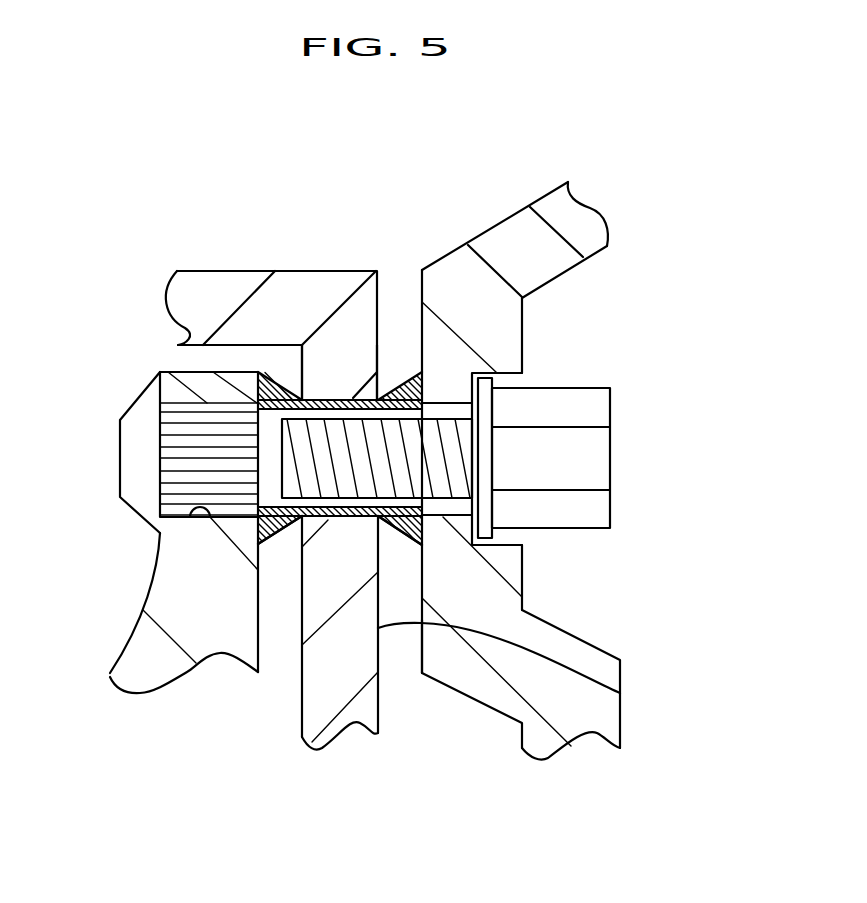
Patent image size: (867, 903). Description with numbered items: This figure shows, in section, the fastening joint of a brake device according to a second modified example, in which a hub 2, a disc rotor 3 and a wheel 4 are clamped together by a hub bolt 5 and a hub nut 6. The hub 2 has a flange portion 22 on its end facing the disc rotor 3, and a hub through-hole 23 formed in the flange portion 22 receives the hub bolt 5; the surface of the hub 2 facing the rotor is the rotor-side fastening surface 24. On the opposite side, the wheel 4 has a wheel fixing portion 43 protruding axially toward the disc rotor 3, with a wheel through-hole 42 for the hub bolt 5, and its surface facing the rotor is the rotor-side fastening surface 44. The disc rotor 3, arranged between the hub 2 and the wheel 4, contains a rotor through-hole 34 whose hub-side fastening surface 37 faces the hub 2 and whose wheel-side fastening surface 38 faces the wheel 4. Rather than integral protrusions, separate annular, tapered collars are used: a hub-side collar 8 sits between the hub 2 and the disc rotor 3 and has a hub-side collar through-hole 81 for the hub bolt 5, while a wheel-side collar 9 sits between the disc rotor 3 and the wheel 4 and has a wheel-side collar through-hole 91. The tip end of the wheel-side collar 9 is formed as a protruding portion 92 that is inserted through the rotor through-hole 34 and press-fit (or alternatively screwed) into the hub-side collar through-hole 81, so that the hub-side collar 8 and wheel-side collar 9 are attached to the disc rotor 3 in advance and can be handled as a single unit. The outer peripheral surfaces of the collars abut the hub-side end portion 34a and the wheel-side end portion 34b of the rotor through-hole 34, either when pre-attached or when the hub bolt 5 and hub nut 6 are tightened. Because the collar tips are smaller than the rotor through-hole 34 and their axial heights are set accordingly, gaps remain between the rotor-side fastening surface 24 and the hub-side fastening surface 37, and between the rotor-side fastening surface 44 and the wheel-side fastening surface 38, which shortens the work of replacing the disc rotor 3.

The hub 2 is at (176, 635).
The disc rotor 3 is at (272, 476).
The wheel 4 is at (538, 452).
The hub bolt 5 is at (107, 459).
The hub nut 6 is at (625, 458).
The hub-side collar 8 is at (277, 376).
The wheel-side collar 9 is at (404, 370).
The flange portion 22 is at (177, 577).
The hub through-hole 23 is at (210, 517).
The rotor-side fastening surface 24 is at (260, 612).
The rotor through-hole 34 is at (238, 384).
The hub-side end portion 34a is at (175, 373).
The wheel-side end portion 34b is at (387, 398).
The hub-side fastening surface 37 is at (302, 716).
The wheel-side fastening surface 38 is at (620, 693).
The wheel through-hole 42 is at (445, 412).
The wheel fixing portion 43 is at (490, 578).
The rotor-side fastening surface 44 is at (422, 643).
The hub-side collar through-hole 81 is at (263, 532).
The wheel-side collar through-hole 91 is at (412, 522).
The protruding portion 92 is at (320, 398).